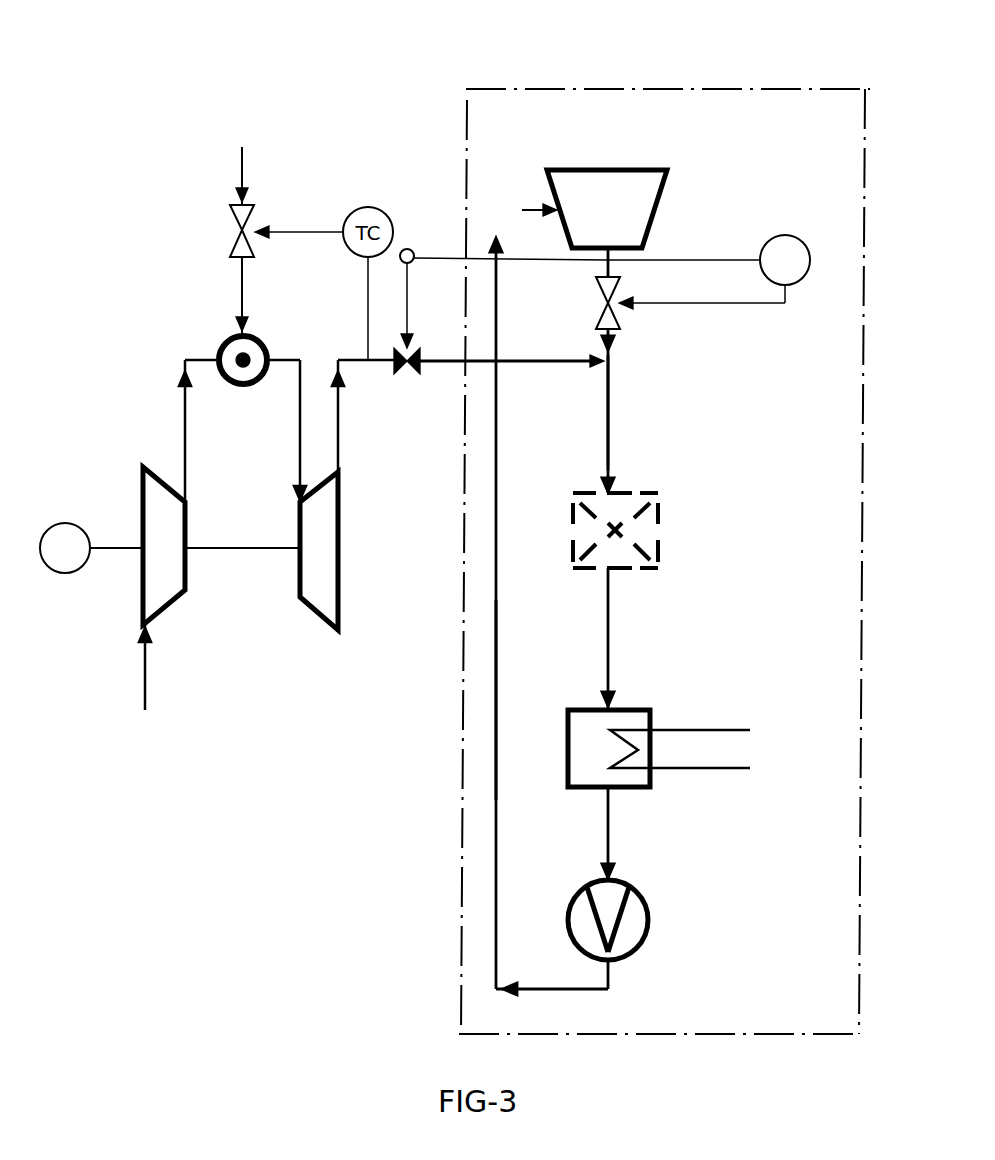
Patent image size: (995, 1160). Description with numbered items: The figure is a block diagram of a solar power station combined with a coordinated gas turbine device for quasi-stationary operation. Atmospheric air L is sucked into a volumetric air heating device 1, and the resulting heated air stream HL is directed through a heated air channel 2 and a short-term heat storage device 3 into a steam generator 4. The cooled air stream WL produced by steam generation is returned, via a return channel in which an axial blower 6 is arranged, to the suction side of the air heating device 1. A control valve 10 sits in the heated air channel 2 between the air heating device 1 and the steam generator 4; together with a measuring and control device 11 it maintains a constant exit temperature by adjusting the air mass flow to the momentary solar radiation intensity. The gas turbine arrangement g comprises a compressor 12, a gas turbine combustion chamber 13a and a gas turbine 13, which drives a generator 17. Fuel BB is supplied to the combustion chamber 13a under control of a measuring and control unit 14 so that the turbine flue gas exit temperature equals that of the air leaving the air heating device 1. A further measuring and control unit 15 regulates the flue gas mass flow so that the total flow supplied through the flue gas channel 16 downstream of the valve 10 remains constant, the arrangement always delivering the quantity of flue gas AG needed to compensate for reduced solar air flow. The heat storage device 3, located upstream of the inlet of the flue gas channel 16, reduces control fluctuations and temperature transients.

The volumetric air heating device 1 is at (618, 190).
The heated air channel 2 is at (613, 383).
The short-term heat storage device 3 is at (660, 515).
The steam generator 4 is at (630, 722).
The axial blower 6 is at (640, 918).
The control valve 10 is at (608, 305).
The measuring and control device 11 is at (810, 250).
The compressor 12 is at (152, 508).
The gas turbine 13 is at (325, 527).
The gas turbine combustion chamber 13a is at (233, 348).
The measuring and control unit 14 is at (238, 235).
The measuring and control unit 15 is at (409, 247).
The flue gas channel 16 is at (450, 366).
The generator 17 is at (70, 566).
The atmospheric air L is at (530, 208).
The fuel BB is at (241, 149).
The flue gas AG is at (521, 365).
The heated air stream HL is at (612, 432).
The cooled air stream WL is at (497, 710).
The gas turbine plant g is at (213, 677).